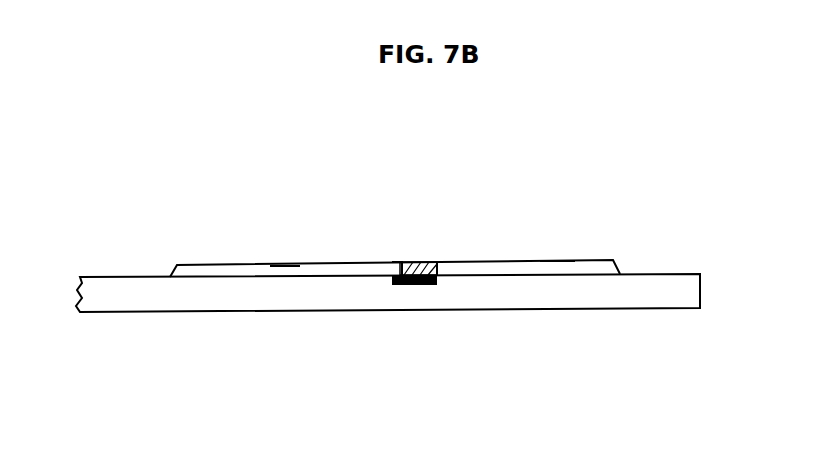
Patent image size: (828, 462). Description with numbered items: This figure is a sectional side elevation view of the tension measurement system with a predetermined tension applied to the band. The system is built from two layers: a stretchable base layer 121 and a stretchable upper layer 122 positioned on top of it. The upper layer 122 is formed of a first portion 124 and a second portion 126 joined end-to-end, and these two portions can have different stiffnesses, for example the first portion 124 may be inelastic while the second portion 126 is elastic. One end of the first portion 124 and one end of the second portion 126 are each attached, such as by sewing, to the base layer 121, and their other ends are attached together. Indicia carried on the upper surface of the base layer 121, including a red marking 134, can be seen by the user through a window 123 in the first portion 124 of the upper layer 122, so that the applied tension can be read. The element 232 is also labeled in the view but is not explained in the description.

The substrate 121 is at (218, 312).
The layer 122 is at (212, 265).
The element 123 is at (416, 252).
The layer portion 124 is at (285, 266).
The layer portion 126 is at (557, 266).
The element 134 is at (400, 263).
The element 232 is at (432, 265).